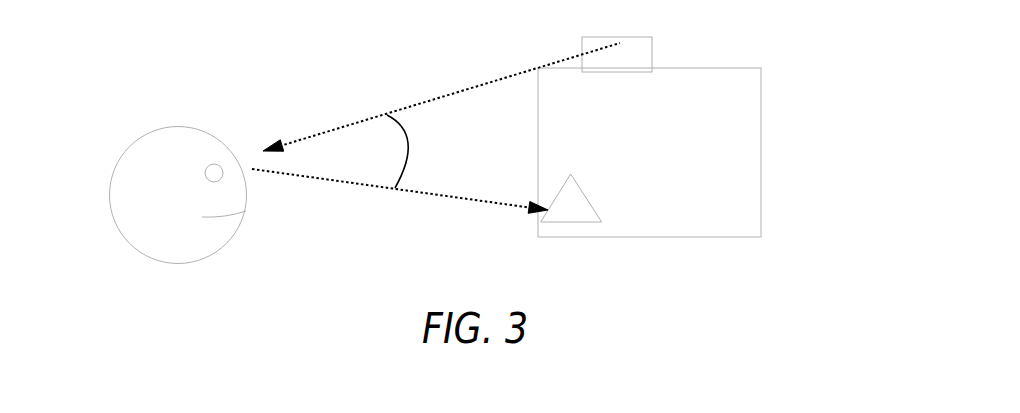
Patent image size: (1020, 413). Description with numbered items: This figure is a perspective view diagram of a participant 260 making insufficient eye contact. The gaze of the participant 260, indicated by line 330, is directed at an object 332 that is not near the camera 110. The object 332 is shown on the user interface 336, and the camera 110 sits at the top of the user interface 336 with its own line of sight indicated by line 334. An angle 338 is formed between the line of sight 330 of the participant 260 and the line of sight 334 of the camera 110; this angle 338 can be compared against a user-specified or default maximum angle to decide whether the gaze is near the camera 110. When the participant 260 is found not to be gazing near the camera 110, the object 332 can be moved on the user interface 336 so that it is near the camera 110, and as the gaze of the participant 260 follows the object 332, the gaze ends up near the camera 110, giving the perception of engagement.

The camera 110 is at (639, 37).
The participant 260 is at (147, 185).
The line of sight of the participant 330 is at (413, 192).
The object 332 is at (585, 199).
The line of sight of the camera 334 is at (486, 87).
The user interface 336 is at (738, 113).
The angle 338 is at (409, 140).